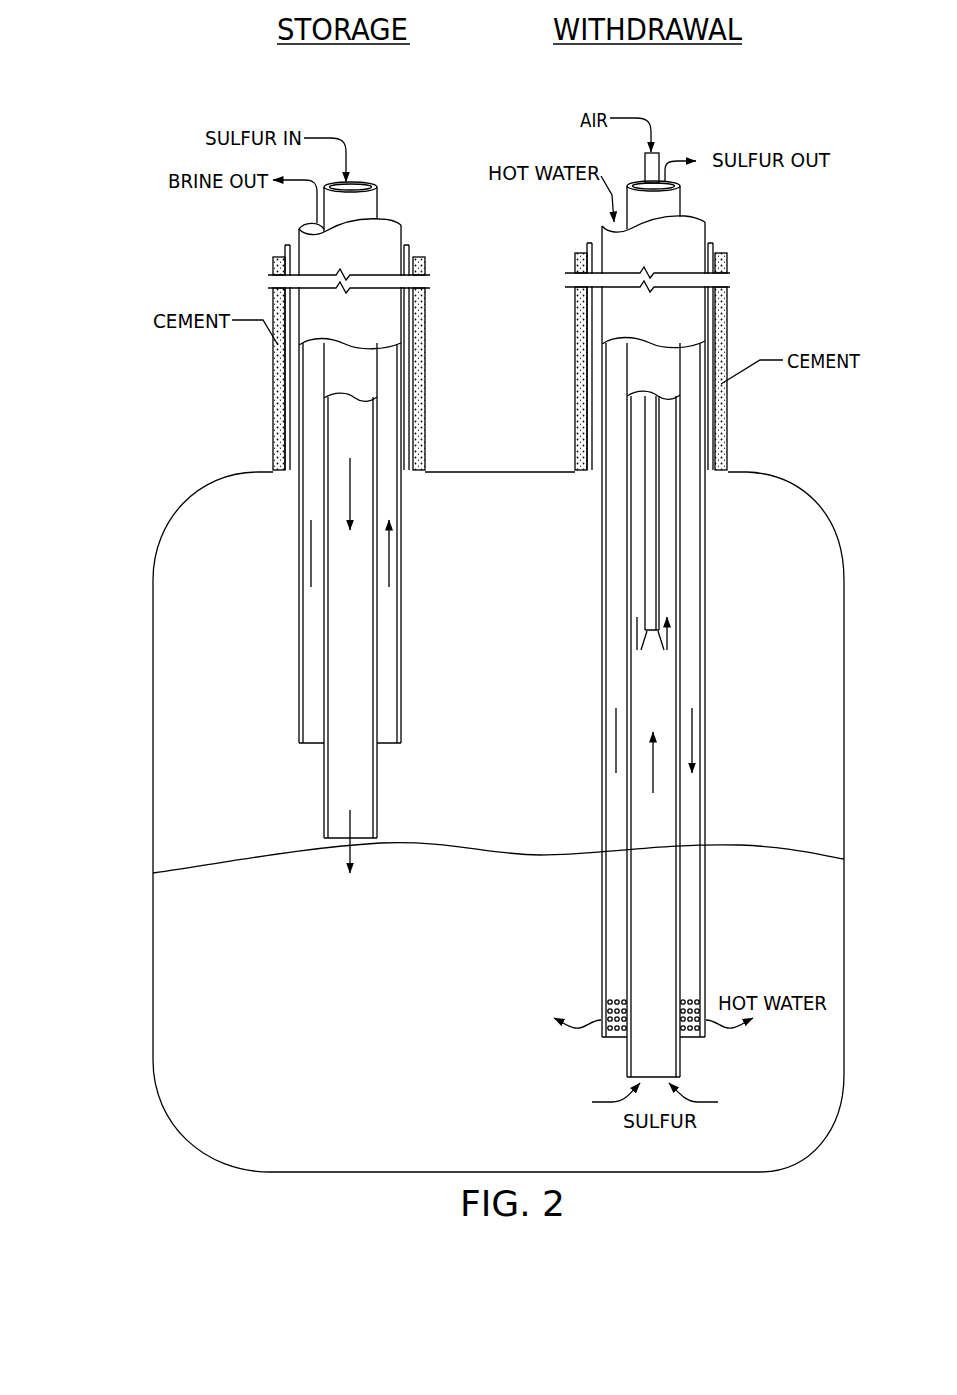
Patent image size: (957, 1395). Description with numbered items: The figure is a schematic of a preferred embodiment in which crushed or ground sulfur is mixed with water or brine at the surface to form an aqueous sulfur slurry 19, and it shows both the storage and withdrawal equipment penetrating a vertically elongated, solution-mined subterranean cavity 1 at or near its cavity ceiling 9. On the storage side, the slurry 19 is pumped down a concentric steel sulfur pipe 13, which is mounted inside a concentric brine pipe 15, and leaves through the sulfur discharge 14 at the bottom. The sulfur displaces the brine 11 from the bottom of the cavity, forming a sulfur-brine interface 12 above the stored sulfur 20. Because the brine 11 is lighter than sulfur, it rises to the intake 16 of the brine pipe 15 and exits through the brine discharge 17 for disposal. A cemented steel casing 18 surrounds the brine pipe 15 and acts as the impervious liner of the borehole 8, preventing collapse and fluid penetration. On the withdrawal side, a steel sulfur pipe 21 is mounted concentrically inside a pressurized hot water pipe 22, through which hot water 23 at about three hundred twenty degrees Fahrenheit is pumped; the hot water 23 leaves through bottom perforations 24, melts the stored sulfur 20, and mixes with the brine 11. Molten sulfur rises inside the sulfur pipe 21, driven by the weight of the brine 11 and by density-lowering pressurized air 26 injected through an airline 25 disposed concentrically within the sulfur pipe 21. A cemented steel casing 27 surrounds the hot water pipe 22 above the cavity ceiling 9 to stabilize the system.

The subterranean cavity 1 is at (150, 680).
The lined borehole 8 is at (427, 312).
The cavity ceiling 9 is at (742, 468).
The brine 11 is at (213, 768).
The sulfur-brine interface 12 is at (442, 841).
The concentric steel sulfur pipe 13 is at (377, 197).
The sulfur discharge 14 is at (362, 840).
The concentric brine pipe 15 is at (401, 238).
The intake 16 is at (390, 744).
The brine discharge 17 is at (313, 226).
The cemented steel casing 18 is at (413, 352).
The sulfur slurry 19 is at (348, 151).
The stored sulfur 20 is at (375, 1120).
The steel sulfur pipe 21 is at (680, 204).
The pressurized hot water pipe 22 is at (705, 229).
The hot water 23 is at (612, 193).
The bottom perforations 24 is at (694, 1008).
The airline 25 is at (658, 164).
The pressurized air 26 is at (652, 132).
The cemented steel casing 27 is at (716, 354).